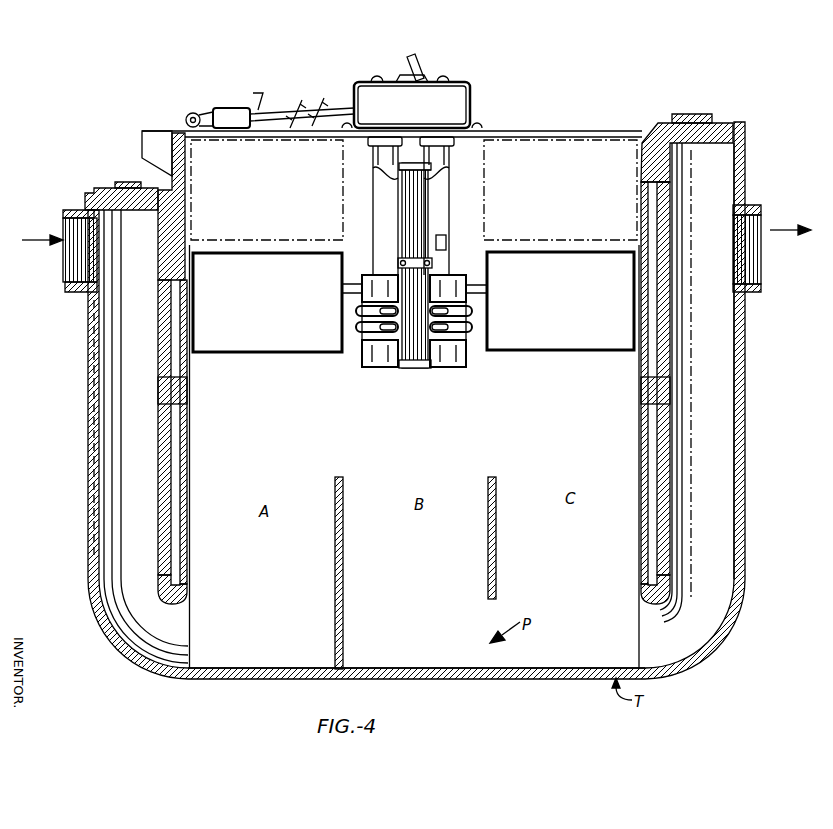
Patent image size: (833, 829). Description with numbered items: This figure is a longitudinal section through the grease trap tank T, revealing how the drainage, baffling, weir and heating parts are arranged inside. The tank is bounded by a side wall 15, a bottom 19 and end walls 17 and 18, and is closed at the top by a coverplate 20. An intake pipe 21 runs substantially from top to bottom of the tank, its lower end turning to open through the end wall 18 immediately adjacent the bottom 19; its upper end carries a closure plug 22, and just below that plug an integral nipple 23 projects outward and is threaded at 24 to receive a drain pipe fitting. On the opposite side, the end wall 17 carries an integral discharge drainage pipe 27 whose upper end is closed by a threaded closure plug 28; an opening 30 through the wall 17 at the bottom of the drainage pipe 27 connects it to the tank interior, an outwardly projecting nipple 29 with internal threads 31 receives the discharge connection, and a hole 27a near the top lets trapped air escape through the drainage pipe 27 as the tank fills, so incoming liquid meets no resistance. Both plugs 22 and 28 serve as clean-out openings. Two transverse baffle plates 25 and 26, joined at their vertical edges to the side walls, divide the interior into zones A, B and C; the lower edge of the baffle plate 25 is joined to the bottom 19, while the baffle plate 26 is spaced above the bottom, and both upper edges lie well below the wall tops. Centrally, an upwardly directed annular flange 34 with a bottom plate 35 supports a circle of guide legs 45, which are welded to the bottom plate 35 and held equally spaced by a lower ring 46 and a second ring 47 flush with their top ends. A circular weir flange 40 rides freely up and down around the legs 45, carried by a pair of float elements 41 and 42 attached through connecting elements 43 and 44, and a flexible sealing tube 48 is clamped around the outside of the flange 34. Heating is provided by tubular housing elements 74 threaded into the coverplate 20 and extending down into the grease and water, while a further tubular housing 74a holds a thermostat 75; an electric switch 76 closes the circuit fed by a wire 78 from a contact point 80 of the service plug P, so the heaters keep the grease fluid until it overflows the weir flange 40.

The side wall 15 is at (384, 414).
The end wall 17 is at (641, 427).
The end wall 18 is at (189, 421).
The bottom 19 is at (272, 680).
The coverplate 20 is at (490, 131).
The intake pipe 21 is at (87, 346).
The closure plug 22 is at (108, 182).
The nipple 23 is at (64, 272).
The threads 24 is at (63, 219).
The baffle plate 25 is at (343, 555).
The baffle plate 26 is at (496, 552).
The discharge drainage pipe 27 is at (746, 170).
The hole 27a is at (640, 146).
The closure plug 28 is at (716, 120).
The nipple 29 is at (742, 286).
The opening 30 is at (639, 634).
The internal threads 31 is at (761, 218).
The annular flange 34 is at (463, 360).
The bottom plate 35 is at (370, 363).
The weir flange 40 is at (478, 268).
The float element 41 is at (566, 352).
The float element 42 is at (238, 355).
The connecting element 43 is at (360, 285).
The connecting element 44 is at (477, 280).
The guide legs 45 is at (430, 214).
The ring 46 is at (409, 251).
The second ring 47 is at (403, 178).
The flexible sealing tube 48 is at (470, 322).
The tubular housing element 74 is at (373, 190).
The tubular housing 74a is at (449, 188).
The thermostat 75 is at (441, 235).
The electric switch 76 is at (418, 56).
The wire 78 is at (336, 110).
The contact point 80 is at (200, 113).